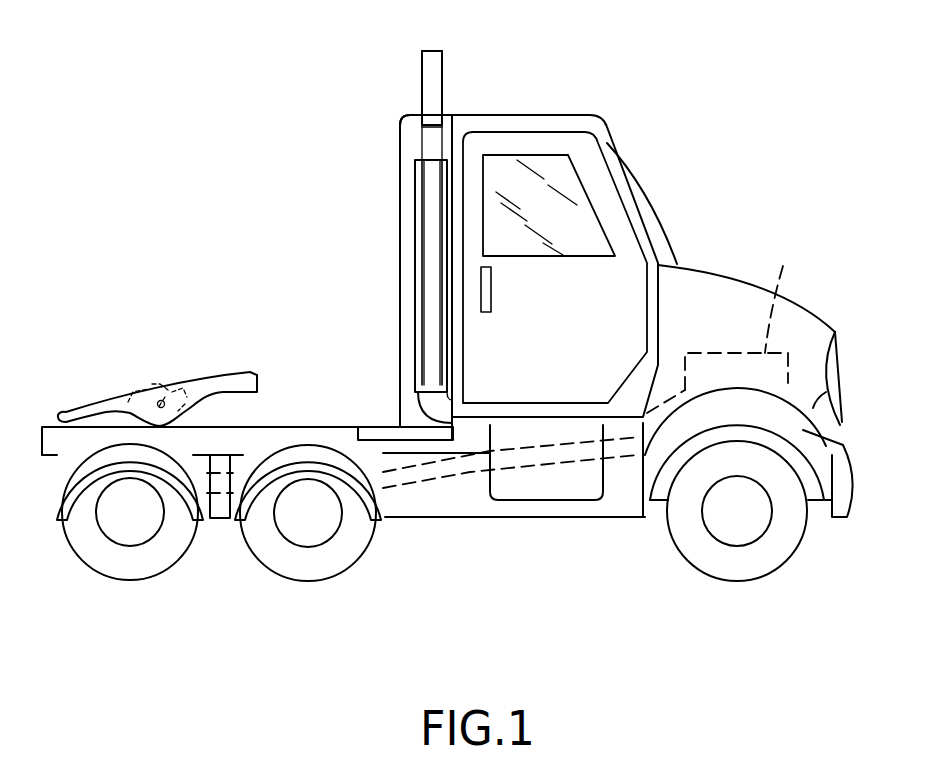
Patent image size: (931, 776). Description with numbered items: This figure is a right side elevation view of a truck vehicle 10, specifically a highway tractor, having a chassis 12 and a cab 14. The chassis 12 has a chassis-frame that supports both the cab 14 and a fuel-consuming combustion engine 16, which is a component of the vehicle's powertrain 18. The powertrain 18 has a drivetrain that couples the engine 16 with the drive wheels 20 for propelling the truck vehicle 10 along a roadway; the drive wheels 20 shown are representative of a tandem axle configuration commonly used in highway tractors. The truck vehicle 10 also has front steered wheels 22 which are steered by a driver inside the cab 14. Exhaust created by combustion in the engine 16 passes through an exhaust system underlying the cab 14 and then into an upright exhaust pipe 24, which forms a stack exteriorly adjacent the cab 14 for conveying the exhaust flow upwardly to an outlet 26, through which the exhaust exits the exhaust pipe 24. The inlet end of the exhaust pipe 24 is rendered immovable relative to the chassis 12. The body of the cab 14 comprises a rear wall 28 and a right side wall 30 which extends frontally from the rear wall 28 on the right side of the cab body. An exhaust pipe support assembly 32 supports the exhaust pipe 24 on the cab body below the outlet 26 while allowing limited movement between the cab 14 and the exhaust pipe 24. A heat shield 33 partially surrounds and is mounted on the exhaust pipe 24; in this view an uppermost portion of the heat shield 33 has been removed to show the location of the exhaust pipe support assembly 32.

The truck vehicle 10 is at (692, 138).
The chassis 12 is at (430, 507).
The cab 14 is at (565, 120).
The combustion engine 16 is at (745, 316).
The powertrain 18 is at (478, 477).
The drive wheels 20 is at (257, 558).
The front steered wheels 22 is at (767, 577).
The exhaust pipe 24 is at (443, 83).
The outlet 26 is at (435, 52).
The rear wall 28 is at (398, 243).
The right side wall 30 is at (408, 277).
The exhaust pipe support assembly 32 is at (410, 121).
The heat shield 33 is at (427, 333).